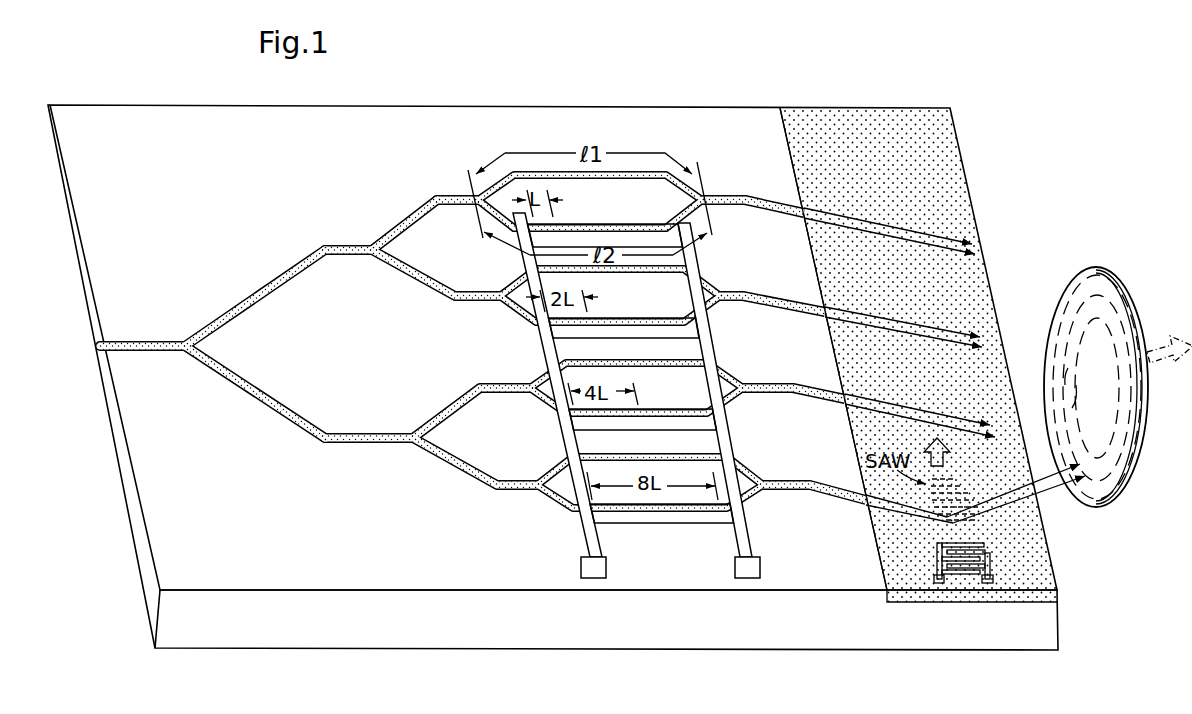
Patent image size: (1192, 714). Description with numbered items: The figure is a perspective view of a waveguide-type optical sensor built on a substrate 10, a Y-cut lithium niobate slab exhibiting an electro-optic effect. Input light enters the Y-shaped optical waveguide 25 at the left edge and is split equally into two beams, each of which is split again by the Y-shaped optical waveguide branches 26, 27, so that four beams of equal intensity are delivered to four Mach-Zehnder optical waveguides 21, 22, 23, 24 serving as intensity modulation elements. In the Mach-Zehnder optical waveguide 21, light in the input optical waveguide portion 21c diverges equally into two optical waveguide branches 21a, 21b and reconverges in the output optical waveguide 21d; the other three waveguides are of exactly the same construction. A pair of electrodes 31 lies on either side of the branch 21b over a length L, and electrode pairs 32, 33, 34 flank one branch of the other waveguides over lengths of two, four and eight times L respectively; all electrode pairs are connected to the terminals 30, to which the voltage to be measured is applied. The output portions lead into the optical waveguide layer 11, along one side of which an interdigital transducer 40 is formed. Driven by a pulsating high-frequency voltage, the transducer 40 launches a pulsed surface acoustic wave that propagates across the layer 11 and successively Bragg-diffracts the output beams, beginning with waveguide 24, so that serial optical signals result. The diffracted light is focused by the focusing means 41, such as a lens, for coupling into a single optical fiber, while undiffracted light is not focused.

The substrate 10 is at (1048, 640).
The optical waveguide layer 11 is at (1035, 598).
The Mach-Zehnder optical waveguide 21 is at (699, 189).
The optical waveguide branch 21a is at (627, 170).
The optical waveguide branch 21b is at (632, 223).
The optical waveguide portion for input light 21c is at (463, 189).
The output optical waveguide 21d is at (745, 195).
The Mach-Zehnder optical waveguide 22 is at (723, 289).
The Mach-Zehnder optical waveguide 23 is at (741, 380).
The Mach-Zehnder optical waveguide 24 is at (756, 475).
The Y-shaped optical waveguide 25 is at (185, 358).
The Y-shaped optical waveguide branch 26 is at (363, 243).
The Y-shaped optical waveguide branch 27 is at (410, 448).
The terminals 30 is at (598, 579).
The electrode pair 31 is at (560, 237).
The electrode pair 32 is at (596, 336).
The electrode pair 33 is at (642, 430).
The electrode pair 34 is at (665, 500).
The interdigital transducer 40 is at (992, 558).
The focusing means 41 is at (1125, 487).